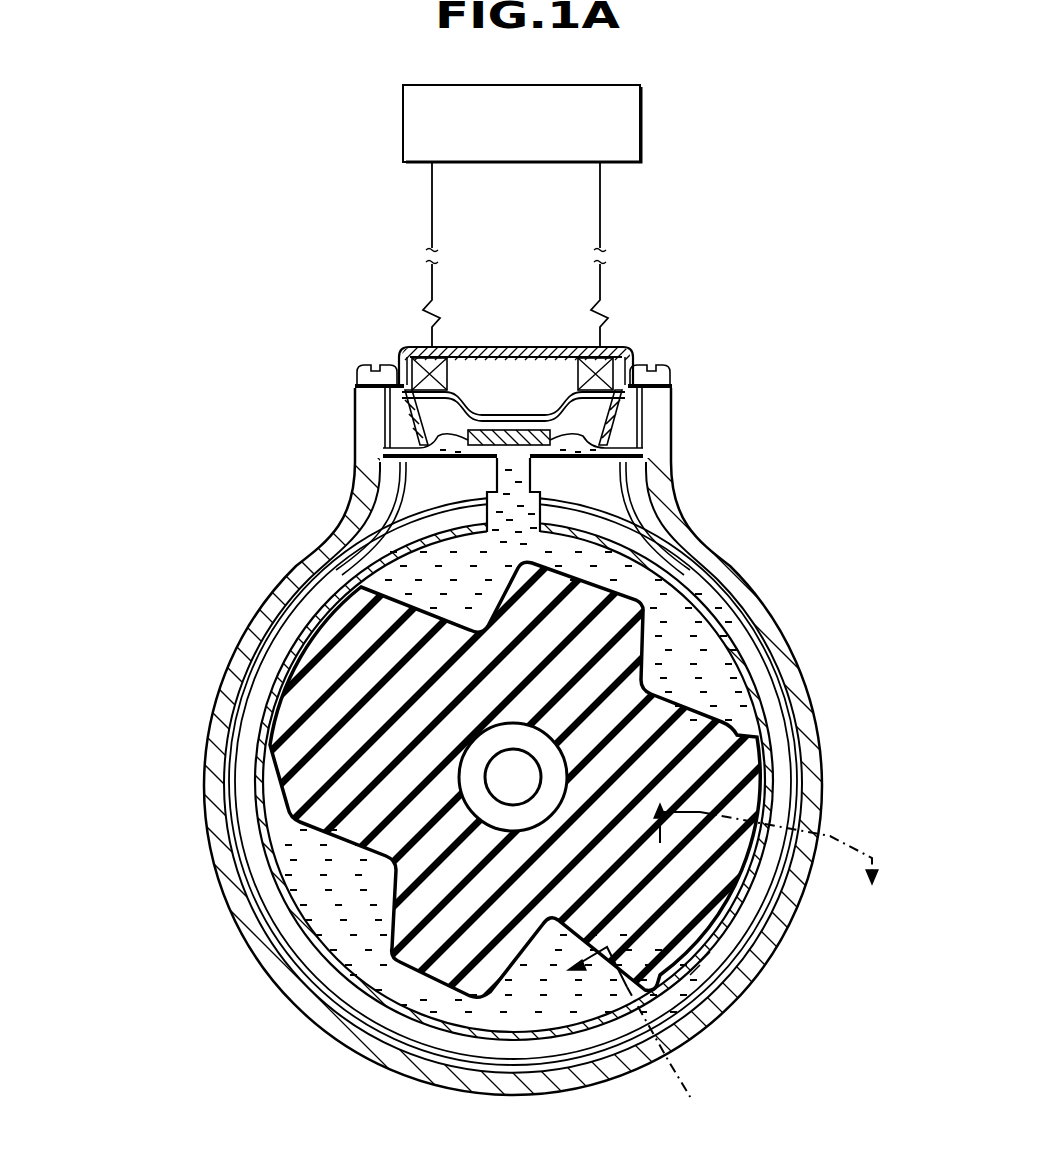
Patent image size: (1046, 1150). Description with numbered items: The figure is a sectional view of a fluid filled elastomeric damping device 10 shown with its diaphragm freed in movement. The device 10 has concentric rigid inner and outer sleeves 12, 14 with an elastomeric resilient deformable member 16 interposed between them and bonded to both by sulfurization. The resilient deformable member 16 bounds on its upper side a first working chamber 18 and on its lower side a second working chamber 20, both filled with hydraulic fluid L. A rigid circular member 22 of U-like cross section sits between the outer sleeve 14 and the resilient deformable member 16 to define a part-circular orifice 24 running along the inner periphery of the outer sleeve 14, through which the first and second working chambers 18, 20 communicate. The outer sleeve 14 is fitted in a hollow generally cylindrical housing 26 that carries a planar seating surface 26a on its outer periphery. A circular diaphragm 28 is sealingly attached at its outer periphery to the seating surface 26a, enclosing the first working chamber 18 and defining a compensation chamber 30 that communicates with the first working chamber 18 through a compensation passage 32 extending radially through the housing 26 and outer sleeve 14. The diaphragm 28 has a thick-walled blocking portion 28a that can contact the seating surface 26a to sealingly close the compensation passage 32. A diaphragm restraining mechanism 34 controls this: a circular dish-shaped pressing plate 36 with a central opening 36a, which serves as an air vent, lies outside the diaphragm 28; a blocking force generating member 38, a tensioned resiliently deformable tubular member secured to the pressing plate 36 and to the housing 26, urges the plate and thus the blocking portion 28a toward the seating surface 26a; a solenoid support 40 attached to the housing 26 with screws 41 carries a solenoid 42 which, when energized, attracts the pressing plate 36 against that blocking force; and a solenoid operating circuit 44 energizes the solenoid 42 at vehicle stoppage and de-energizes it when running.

The fluid filled elastomeric damping device 10 is at (828, 644).
The inner sleeve 12 is at (459, 777).
The outer sleeve 14 is at (728, 588).
The resilient deformable member 16 is at (283, 720).
The first working chamber 18 is at (668, 590).
The second working chamber 20 is at (577, 1012).
The rigid circular member 22 is at (358, 1012).
The orifice 24 is at (765, 913).
The housing 26 is at (352, 503).
The seating surface 26a is at (430, 446).
The diaphragm 28 is at (407, 437).
The blocking portion 28a is at (478, 349).
The compensation chamber 30 is at (590, 447).
The compensation passage 32 is at (530, 478).
The diaphragm restraining mechanism 34 is at (605, 343).
The pressing plate 36 is at (560, 388).
The central opening 36a is at (517, 347).
The blocking force generating member 38 is at (637, 433).
The solenoid support 40 is at (407, 345).
The screws 41 is at (370, 362).
The solenoid 42 is at (627, 365).
The solenoid operating circuit 44 is at (643, 88).
The hydraulic fluid L is at (720, 984).